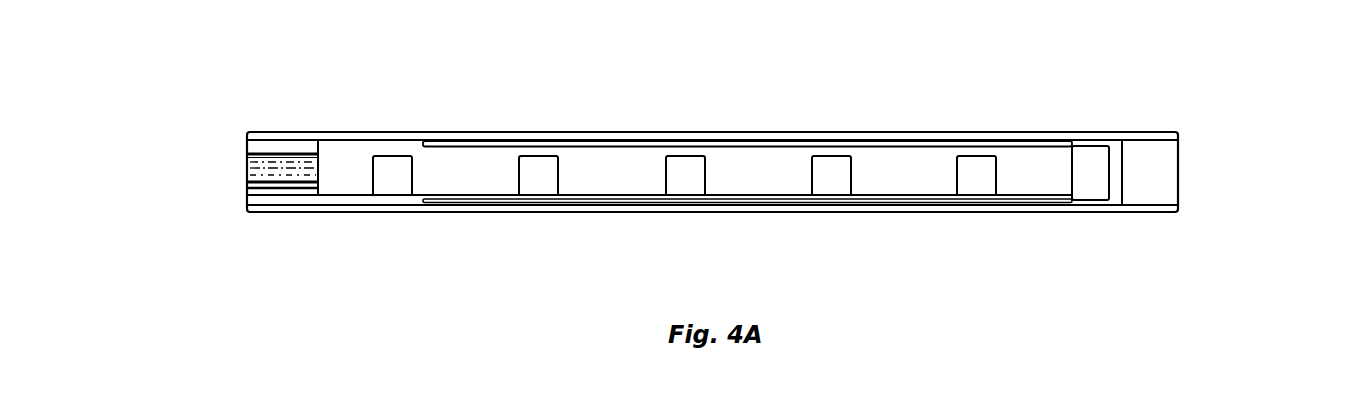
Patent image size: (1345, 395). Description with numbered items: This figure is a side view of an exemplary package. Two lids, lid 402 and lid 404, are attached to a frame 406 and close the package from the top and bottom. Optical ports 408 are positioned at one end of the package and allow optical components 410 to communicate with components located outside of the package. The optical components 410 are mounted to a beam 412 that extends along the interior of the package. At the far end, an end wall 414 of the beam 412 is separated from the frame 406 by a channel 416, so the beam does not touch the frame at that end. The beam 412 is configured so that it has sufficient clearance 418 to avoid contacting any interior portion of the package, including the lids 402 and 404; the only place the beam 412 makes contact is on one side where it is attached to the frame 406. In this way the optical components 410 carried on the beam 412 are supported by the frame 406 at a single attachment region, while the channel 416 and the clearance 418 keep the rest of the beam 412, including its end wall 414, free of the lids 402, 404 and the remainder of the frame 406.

The lid 402 is at (298, 130).
The lid 404 is at (778, 213).
The frame 406 is at (1168, 167).
The optical ports 408 is at (258, 173).
The optical components 410 is at (382, 160).
The beam 412 is at (627, 157).
The end wall 414 is at (1090, 165).
The channel 416 is at (1115, 175).
The clearance 418 is at (870, 143).